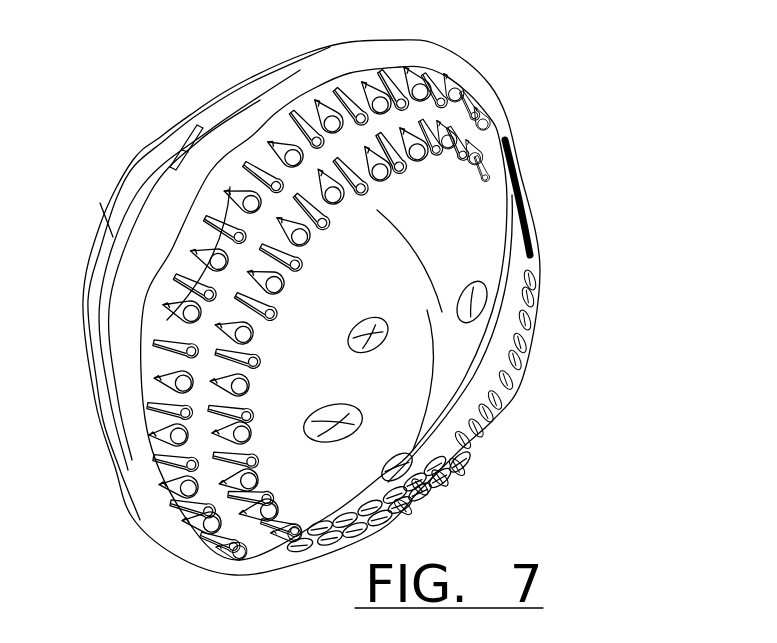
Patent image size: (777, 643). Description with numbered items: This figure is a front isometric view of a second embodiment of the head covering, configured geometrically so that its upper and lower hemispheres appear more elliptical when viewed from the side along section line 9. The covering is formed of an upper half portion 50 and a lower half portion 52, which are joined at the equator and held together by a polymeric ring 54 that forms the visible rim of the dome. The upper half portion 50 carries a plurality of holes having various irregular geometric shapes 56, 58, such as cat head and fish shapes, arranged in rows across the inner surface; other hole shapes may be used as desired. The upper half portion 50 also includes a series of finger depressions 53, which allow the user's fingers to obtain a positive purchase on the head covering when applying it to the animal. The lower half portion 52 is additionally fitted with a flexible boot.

The upper half portion 50 is at (475, 233).
The lower half portion 52 is at (133, 232).
The finger depressions 53 is at (490, 283).
The polymeric ring 54 is at (437, 43).
The irregular geometric shaped hole 56 is at (178, 487).
The irregular geometric shaped hole 58 is at (152, 457).
The section line 9- 9 is at (330, 8).